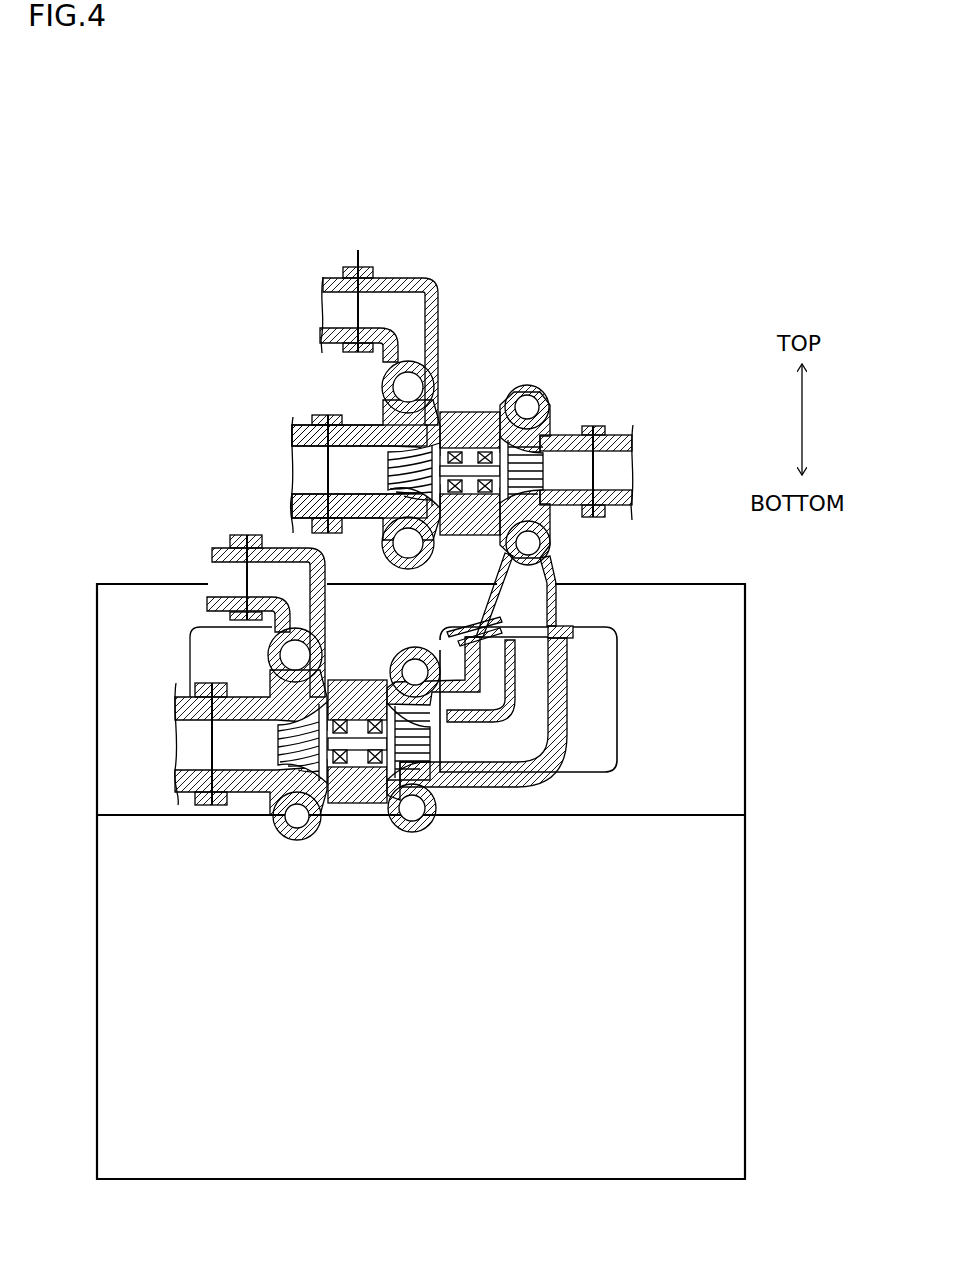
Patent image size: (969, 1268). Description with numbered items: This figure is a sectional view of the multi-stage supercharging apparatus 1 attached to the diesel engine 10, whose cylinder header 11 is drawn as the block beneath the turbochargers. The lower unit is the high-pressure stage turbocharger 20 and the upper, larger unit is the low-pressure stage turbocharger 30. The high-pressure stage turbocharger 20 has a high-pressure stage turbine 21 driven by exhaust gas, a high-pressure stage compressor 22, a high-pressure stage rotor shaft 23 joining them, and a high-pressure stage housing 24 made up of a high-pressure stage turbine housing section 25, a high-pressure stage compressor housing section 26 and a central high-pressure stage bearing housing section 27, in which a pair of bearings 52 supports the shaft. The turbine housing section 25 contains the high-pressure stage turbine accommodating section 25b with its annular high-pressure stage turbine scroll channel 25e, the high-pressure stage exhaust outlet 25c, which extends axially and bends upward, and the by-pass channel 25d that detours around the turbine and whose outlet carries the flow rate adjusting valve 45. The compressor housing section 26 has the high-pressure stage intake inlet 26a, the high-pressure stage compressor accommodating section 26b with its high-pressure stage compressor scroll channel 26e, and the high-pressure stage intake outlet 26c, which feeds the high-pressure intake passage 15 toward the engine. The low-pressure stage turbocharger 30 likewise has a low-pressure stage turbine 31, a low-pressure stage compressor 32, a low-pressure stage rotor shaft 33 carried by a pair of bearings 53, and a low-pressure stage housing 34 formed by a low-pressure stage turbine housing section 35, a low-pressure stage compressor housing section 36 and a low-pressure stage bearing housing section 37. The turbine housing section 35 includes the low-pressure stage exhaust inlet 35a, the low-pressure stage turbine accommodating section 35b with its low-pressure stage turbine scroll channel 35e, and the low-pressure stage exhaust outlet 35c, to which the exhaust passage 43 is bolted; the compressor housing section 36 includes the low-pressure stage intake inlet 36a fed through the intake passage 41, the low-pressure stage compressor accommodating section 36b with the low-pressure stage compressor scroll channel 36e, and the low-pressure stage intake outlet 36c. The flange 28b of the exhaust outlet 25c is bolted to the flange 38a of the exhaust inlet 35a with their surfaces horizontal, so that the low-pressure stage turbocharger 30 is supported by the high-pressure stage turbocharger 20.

The multi-stage supercharging apparatus 1 is at (258, 150).
The diesel engine 10 is at (777, 860).
The cylinder header 11 is at (748, 728).
The high-pressure intake passage 15 is at (208, 620).
The high-pressure stage turbocharger 20 is at (178, 500).
The high-pressure stage turbine 21 is at (480, 775).
The high-pressure stage compressor 22 is at (270, 793).
The high-pressure stage rotor shaft 23 is at (395, 690).
The high-pressure stage housing 24 is at (493, 987).
The high-pressure stage turbine housing section 25 is at (443, 791).
The high-pressure stage turbine accommodating section 25b is at (407, 836).
The high-pressure stage exhaust outlet 25c is at (513, 788).
The by-pass channel 25d is at (487, 693).
The high-pressure stage turbine scroll channel 25e is at (417, 815).
The high-pressure stage compressor housing section 26 is at (228, 792).
The high-pressure stage intake inlet 26a is at (238, 791).
The high-pressure stage compressor accommodating section 26b is at (298, 841).
The high-pressure stage intake outlet 26c is at (277, 623).
The high-pressure stage compressor scroll channel 26e is at (288, 655).
The high-pressure stage bearing housing section 27 is at (382, 805).
The flange 28b is at (573, 648).
The low-pressure stage turbocharger 30 is at (290, 366).
The low-pressure stage turbine 31 is at (575, 436).
The low-pressure stage compressor 32 is at (388, 474).
The low-pressure stage rotor shaft 33 is at (457, 408).
The low-pressure stage housing 34 is at (695, 177).
The low-pressure stage turbine housing section 35 is at (616, 413).
The low-pressure stage exhaust inlet 35a is at (553, 577).
The low-pressure stage turbine accommodating section 35b is at (513, 392).
The low-pressure stage exhaust outlet 35c is at (568, 433).
The low-pressure stage turbine scroll channel 35e is at (536, 543).
The low-pressure stage compressor housing section 36 is at (376, 306).
The low-pressure stage intake inlet 36a is at (379, 326).
The low-pressure stage compressor accommodating section 36b is at (440, 358).
The low-pressure stage intake outlet 36c is at (400, 362).
The low-pressure stage compressor scroll channel 36e is at (377, 407).
The low-pressure stage bearing housing section 37 is at (510, 393).
The flange 38a is at (574, 614).
The intake passage 41 is at (294, 428).
The exhaust passage 43 is at (608, 430).
The flow rate adjusting valve 45 is at (473, 628).
The bearings 52 is at (360, 720).
The bearings 53 is at (482, 413).